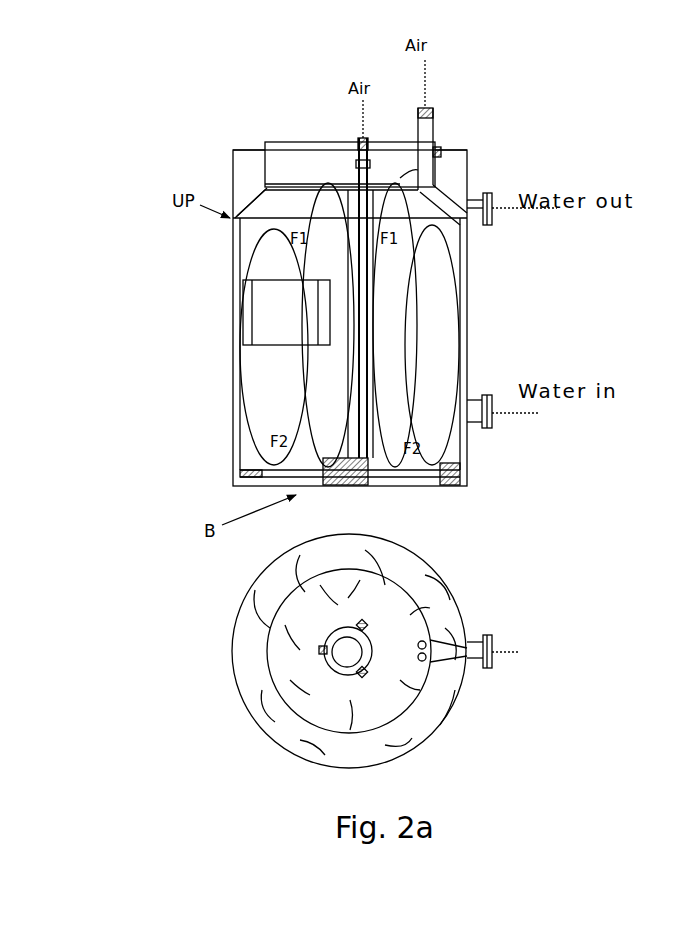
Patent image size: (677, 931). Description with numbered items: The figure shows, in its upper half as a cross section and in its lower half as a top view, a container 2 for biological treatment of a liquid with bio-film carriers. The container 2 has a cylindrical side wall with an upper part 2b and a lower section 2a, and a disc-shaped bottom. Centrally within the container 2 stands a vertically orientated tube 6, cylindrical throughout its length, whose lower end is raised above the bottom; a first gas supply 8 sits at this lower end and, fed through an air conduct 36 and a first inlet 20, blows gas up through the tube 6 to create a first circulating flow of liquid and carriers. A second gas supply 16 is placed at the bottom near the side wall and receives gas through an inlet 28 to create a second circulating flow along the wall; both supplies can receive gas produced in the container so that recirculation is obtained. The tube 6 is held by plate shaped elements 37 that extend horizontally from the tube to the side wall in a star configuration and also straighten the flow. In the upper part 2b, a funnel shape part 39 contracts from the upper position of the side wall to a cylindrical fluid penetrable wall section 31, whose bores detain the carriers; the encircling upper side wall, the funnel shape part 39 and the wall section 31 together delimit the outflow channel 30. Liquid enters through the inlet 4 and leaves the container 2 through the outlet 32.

The container 2 is at (475, 367).
The vessel lower section height 2a is at (112, 219).
The upper part 2b is at (112, 153).
The inlet 4 is at (513, 435).
The vertically orientated tube 6 is at (372, 365).
The first gas supply 8 is at (370, 462).
The second gas supply 16 is at (450, 478).
The first inlet 20 is at (352, 135).
The inlet 28 is at (425, 122).
The outflow channel 30 is at (458, 173).
The fluid penetrable wall section 31 is at (438, 152).
The outlet 32 is at (523, 227).
The air conduct 36 is at (355, 165).
The plate shaped elements 37 is at (260, 300).
The funnel shape part 39 is at (247, 202).